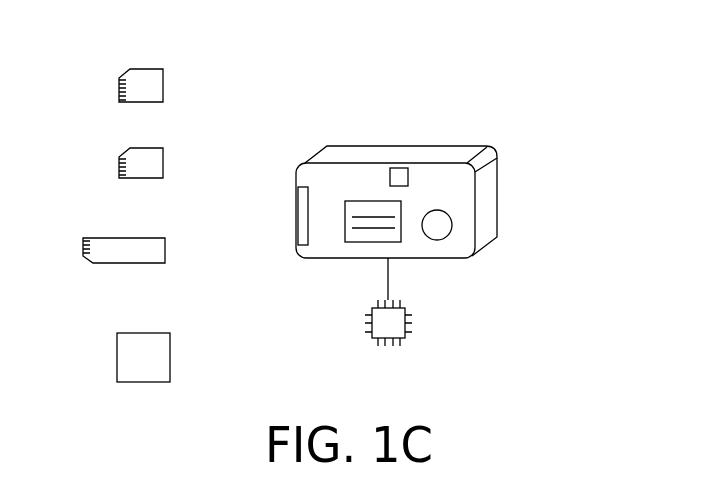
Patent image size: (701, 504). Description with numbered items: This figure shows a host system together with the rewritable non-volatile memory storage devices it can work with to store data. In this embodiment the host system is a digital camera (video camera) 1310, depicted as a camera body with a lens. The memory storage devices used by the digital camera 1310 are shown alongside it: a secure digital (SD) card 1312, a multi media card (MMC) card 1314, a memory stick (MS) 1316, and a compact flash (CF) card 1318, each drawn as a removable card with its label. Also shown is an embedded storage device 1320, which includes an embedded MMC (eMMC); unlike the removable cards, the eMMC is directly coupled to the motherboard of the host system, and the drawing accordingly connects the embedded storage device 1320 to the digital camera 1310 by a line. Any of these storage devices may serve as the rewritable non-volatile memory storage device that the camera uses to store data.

The digital camera (video camera) 1310 is at (498, 187).
The secure digital (SD) card 1312 is at (164, 78).
The multi media card (MMC) card 1314 is at (164, 156).
The memory stick (MS) 1316 is at (166, 250).
The compact flash (CF) card 1318 is at (171, 350).
The embedded storage device 1320 is at (413, 322).